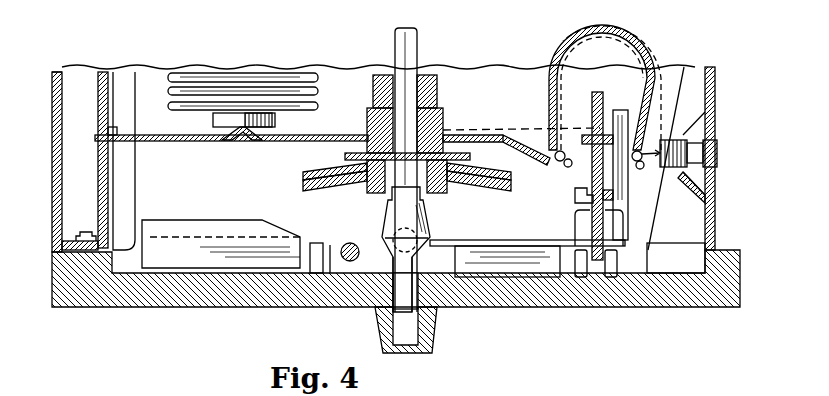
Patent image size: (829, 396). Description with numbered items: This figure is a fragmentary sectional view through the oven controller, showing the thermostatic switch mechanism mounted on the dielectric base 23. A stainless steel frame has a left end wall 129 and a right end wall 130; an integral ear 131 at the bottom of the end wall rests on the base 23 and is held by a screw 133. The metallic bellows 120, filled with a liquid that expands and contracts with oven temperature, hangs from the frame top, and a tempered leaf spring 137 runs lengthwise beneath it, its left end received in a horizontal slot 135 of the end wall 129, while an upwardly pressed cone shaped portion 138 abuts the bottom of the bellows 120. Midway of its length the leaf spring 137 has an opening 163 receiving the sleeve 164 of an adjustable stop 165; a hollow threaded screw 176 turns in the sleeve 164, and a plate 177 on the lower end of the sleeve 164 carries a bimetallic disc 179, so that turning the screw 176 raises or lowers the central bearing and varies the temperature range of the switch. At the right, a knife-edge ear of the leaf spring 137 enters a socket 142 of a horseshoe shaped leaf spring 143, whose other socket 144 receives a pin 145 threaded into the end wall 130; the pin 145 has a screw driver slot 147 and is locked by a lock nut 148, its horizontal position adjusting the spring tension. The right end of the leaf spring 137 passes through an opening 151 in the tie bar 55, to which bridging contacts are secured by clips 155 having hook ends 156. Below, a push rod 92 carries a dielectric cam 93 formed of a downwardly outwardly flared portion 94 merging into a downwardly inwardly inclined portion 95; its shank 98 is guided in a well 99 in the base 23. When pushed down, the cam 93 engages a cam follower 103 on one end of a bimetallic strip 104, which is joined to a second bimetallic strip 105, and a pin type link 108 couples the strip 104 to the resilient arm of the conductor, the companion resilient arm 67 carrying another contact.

The base 23 is at (54, 270).
The tie bar 55 is at (596, 92).
The resilient arm 67 is at (505, 246).
The push rod 92 is at (420, 43).
The cam 93 is at (392, 211).
The downwardly outwardly flared portion 94 is at (428, 216).
The downwardly inwardly inclined portion 95 is at (431, 236).
The shank 98 is at (432, 316).
The well 99 is at (430, 341).
The cam follower 103 is at (393, 296).
The bimetallic strip 104 is at (442, 240).
The bimetallic strip 105 is at (178, 230).
The pin type link 108 is at (348, 243).
The metallic bellows 120 is at (172, 118).
The left end wall 129 is at (100, 102).
The right end wall 130 is at (715, 90).
The ear 131 is at (62, 242).
The screw 133 is at (84, 232).
The slot 135 is at (108, 131).
The leaf spring 137 is at (204, 142).
The cone shaped portion 138 is at (250, 142).
The socket 142 is at (569, 166).
The horseshoe shaped leaf spring 143 is at (553, 72).
The socket 144 is at (638, 170).
The pin 145 is at (663, 168).
The screw driver slot 147 is at (716, 150).
The lock nut 148 is at (712, 170).
The opening 151 is at (592, 113).
The clip 155 is at (616, 112).
The hook 156 is at (616, 212).
The opening 163 is at (364, 134).
The sleeve 164 is at (444, 121).
The adjustable stop 165 is at (345, 156).
The hollow threaded screw 176 is at (437, 92).
The plate 177 is at (323, 192).
The bimetallic disc 179 is at (302, 175).